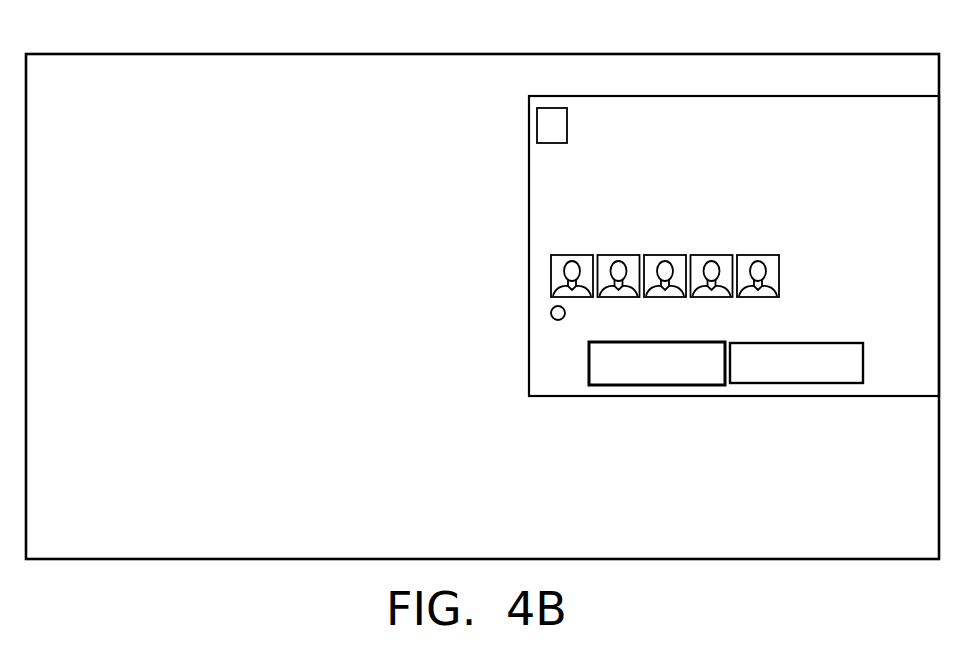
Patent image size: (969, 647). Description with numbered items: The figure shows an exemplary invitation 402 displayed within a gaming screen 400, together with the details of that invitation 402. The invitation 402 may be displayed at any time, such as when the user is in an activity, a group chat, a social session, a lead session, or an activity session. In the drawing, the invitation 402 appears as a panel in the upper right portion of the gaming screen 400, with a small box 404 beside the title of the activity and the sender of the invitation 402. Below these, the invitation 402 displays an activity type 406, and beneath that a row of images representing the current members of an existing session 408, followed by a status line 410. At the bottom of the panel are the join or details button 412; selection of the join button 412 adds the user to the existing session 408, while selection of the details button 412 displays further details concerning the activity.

The gaming screen 400 is at (819, 47).
The invitation 402 is at (688, 95).
The game icon checkbox 404 is at (553, 108).
The activity type 406 is at (758, 208).
The current members of an existing session 408 is at (781, 263).
The game status line 410 is at (858, 300).
The join or details button 412 is at (817, 385).